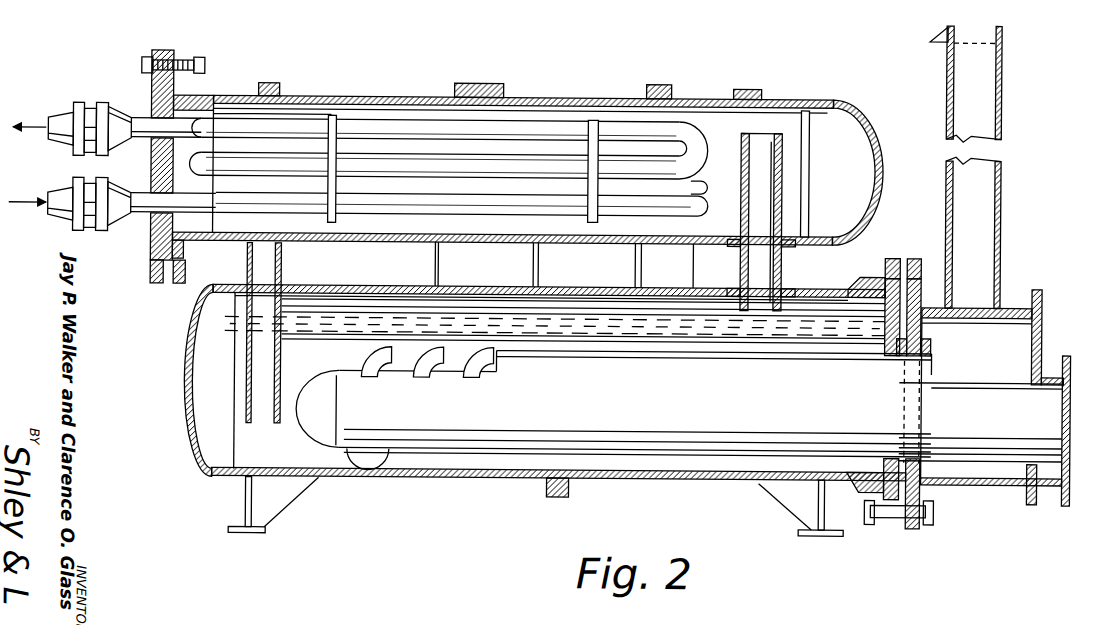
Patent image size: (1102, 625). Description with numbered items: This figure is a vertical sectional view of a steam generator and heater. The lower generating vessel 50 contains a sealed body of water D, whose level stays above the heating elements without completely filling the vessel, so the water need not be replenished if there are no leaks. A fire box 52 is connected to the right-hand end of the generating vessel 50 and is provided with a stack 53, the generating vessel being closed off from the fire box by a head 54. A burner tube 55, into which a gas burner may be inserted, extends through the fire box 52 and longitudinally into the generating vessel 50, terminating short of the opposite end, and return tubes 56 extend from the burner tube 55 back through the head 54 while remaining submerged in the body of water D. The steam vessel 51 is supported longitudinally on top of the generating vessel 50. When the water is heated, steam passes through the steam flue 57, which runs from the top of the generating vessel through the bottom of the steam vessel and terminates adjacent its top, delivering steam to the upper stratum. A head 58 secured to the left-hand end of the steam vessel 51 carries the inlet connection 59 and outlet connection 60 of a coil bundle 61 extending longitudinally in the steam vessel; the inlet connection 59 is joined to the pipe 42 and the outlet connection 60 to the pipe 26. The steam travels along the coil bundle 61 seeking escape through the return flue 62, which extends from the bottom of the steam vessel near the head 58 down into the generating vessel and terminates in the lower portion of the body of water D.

The pipe 26 is at (62, 119).
The pipe 42 is at (62, 197).
The generating vessel 50 is at (663, 480).
The steam vessel 51 is at (612, 102).
The fire box 52 is at (1003, 303).
The stack 53 is at (945, 206).
The head 54 is at (921, 490).
The burner tube 55 is at (1041, 391).
The return tubes 56 is at (605, 313).
The steam flue 57 is at (782, 272).
The head 58 is at (196, 73).
The inlet connection 59 is at (145, 218).
The outlet connection 60 is at (141, 121).
The coil bundle 61 is at (551, 125).
The return flue 62 is at (282, 268).
The body of water D is at (247, 463).